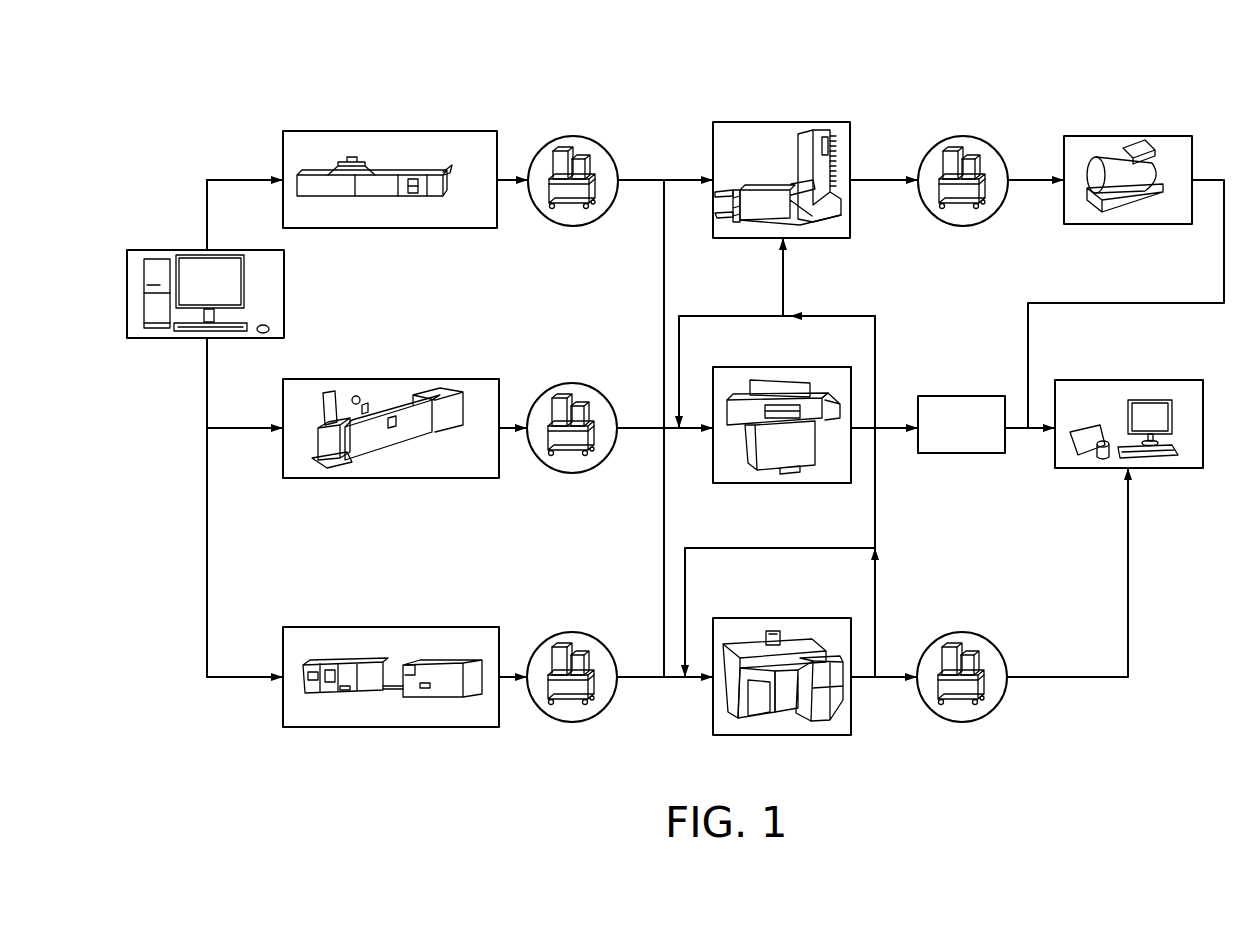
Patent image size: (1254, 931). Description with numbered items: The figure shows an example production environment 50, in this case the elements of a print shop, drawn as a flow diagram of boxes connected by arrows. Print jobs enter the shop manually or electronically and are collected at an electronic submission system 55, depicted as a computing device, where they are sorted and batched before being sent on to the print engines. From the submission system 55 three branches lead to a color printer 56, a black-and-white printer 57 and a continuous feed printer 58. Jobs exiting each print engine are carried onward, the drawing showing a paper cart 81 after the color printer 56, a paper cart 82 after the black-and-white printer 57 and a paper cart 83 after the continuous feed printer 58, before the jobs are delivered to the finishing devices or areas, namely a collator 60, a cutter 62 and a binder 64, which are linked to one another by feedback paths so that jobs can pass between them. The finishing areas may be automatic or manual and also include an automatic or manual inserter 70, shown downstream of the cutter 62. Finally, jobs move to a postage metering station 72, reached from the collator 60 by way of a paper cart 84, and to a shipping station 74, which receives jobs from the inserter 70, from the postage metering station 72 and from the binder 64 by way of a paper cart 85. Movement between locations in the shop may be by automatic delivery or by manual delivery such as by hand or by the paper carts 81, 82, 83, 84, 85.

The production environment 50 is at (235, 120).
The electronic submission system 55 is at (160, 339).
The color printer 56 is at (408, 229).
The black-and-white printer 57 is at (410, 479).
The continuous feed printer 58 is at (408, 728).
The collator 60 is at (793, 239).
The cutter 62 is at (793, 484).
The binder 64 is at (793, 736).
The inserter 70 is at (960, 454).
The postage metering station 72 is at (1123, 225).
The shipping station 74 is at (1155, 469).
The paper cart 81 is at (573, 226).
The paper cart 82 is at (573, 473).
The paper cart 83 is at (573, 722).
The paper cart 84 is at (963, 226).
The paper cart 85 is at (963, 722).